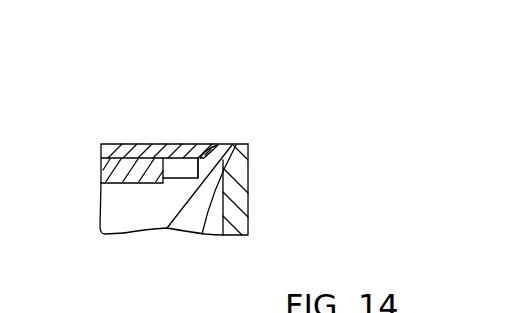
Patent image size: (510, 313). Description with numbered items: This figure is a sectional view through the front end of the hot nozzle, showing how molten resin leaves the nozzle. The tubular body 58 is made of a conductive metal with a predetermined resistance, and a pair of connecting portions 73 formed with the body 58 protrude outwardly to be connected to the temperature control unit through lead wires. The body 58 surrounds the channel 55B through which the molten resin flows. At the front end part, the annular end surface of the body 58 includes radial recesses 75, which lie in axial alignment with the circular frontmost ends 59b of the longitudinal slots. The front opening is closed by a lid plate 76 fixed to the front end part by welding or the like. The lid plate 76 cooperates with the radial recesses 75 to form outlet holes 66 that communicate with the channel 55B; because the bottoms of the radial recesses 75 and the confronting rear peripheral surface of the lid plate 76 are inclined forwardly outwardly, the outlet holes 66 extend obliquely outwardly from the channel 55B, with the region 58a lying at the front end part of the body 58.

The tubular body 58 is at (118, 169).
The connecting portions 73 is at (137, 147).
The circular frontmost ends of the slots 59b is at (178, 166).
The radial recesses 75 is at (214, 150).
The lid plate 76 is at (239, 202).
The outlet holes 66 is at (202, 234).
The channel 55B is at (138, 232).
The seal bottom lip 58a is at (155, 213).